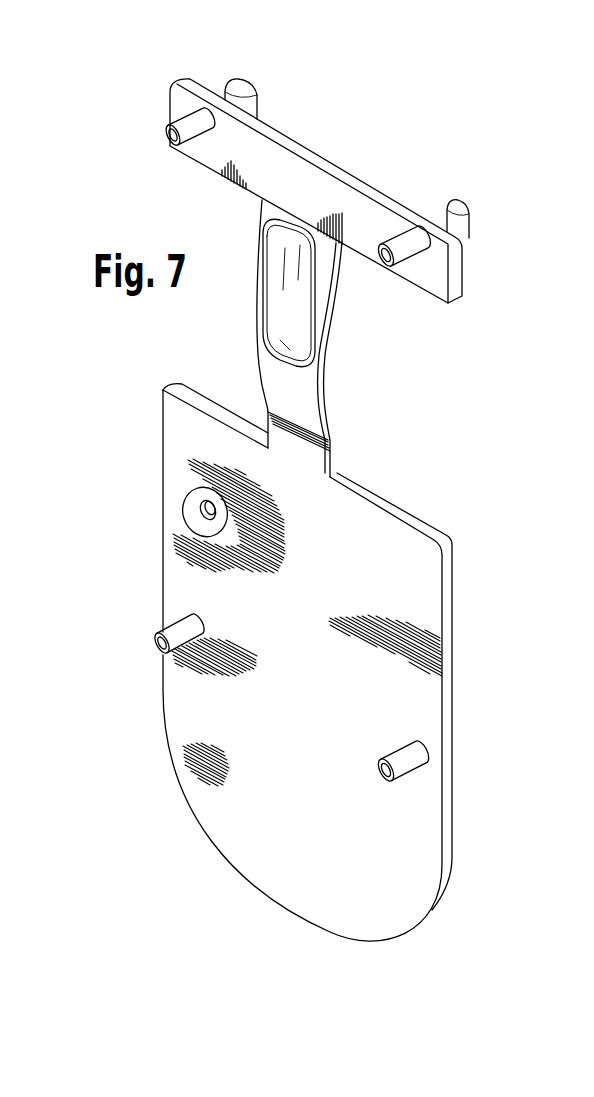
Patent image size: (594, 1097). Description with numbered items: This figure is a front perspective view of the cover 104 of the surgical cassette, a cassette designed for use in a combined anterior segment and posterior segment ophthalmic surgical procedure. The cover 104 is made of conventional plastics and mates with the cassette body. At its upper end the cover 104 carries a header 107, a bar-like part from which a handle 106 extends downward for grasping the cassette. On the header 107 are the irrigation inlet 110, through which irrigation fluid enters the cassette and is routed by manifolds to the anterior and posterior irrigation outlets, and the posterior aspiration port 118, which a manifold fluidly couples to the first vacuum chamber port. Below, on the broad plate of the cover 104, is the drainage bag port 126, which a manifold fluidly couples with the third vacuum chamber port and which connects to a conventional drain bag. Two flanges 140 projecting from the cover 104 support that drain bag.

The cover 104 is at (353, 580).
The handle 106 is at (297, 280).
The header 107 is at (262, 150).
The irrigation inlet 110 is at (175, 122).
The posterior aspiration port 118 is at (445, 213).
The drainage bag port 126 is at (200, 507).
The flanges 140 is at (155, 634).